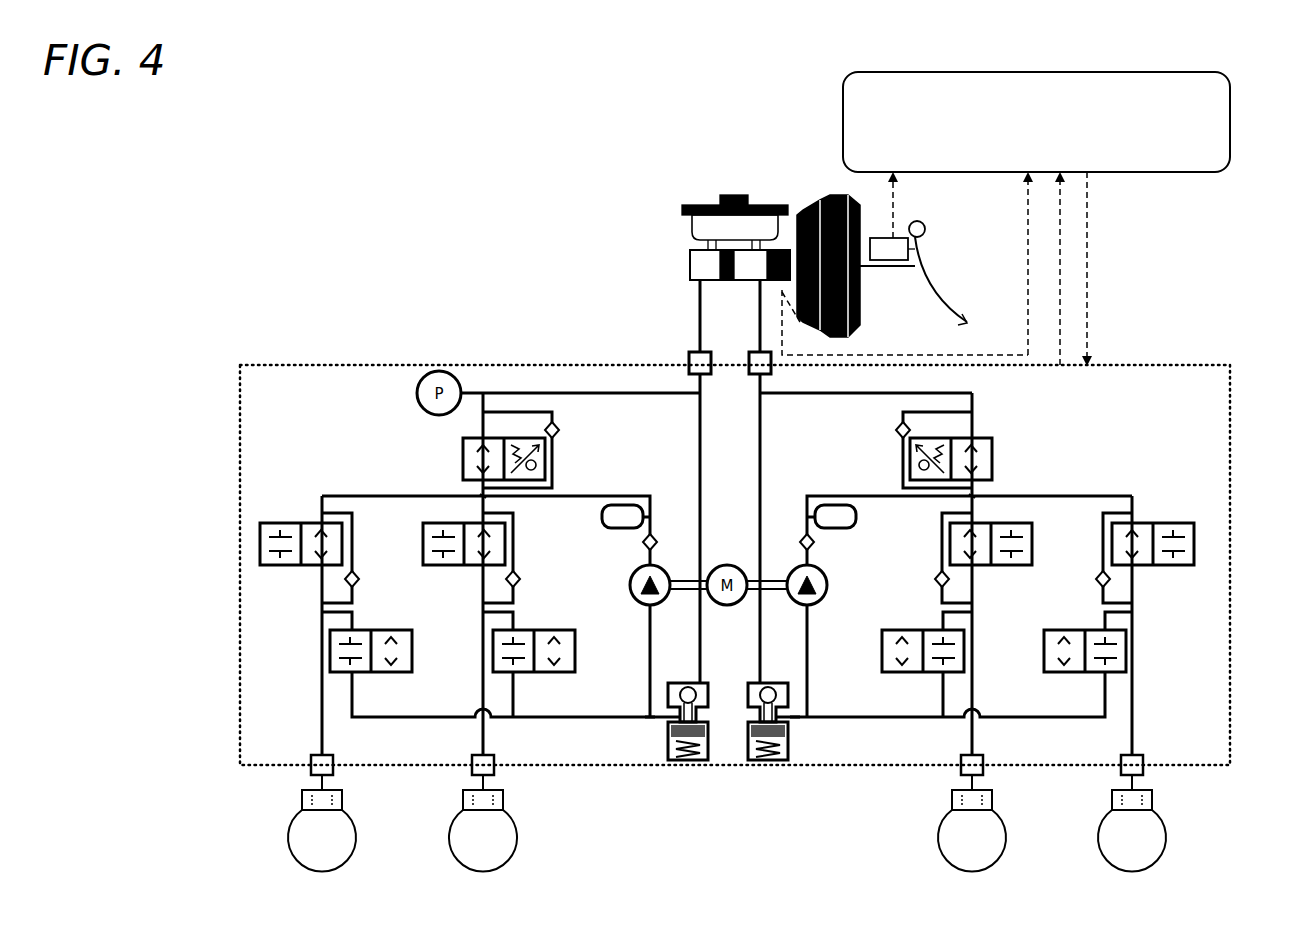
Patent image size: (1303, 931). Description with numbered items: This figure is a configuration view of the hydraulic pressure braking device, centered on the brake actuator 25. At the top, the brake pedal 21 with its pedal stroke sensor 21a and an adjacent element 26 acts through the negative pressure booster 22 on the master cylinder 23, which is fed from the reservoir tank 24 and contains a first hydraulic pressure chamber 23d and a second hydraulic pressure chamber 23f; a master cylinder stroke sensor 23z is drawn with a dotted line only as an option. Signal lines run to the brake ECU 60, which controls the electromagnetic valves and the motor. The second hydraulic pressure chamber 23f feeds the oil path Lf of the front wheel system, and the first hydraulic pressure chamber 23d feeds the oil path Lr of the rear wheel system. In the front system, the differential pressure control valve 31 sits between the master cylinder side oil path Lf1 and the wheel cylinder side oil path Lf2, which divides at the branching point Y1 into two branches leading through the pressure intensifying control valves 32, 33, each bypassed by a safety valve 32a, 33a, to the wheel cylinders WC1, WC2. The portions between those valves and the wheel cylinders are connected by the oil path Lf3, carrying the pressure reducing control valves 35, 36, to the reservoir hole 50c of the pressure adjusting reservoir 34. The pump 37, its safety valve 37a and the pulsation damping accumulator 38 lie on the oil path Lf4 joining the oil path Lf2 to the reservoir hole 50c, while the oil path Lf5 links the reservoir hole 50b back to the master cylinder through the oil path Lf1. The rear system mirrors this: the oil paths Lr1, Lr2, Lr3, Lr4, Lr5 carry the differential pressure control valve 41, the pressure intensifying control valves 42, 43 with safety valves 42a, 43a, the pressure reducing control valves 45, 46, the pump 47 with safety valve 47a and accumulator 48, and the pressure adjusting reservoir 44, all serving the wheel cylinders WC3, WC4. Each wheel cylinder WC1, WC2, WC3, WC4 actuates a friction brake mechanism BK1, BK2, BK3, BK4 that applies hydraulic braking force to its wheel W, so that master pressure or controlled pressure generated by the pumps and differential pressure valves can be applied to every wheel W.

The brake ECU 60 is at (1232, 120).
The reservoir tank 24 is at (733, 195).
The master cylinder 23 is at (690, 256).
The second hydraulic pressure chamber 23f is at (700, 270).
The first hydraulic pressure chamber 23d is at (757, 272).
The master cylinder stroke sensor 23z is at (905, 324).
The negative pressure booster 22 is at (826, 197).
The pedal stroke sensor 26 is at (890, 263).
The pedal stroke sensor 21a is at (897, 238).
The brake pedal 21 is at (928, 281).
The brake actuator 25 is at (1155, 365).
The oil path Lf1 is at (575, 393).
The oil path Lf is at (527, 383).
The oil path Lf2 is at (482, 588).
The oil path Lf3 is at (540, 720).
The oil path Lf4 is at (568, 496).
The oil path Lf5 is at (698, 448).
The oil path Lr1 is at (848, 393).
The oil path Lr is at (980, 405).
The oil path Lr2 is at (1137, 598).
The oil path Lr3 is at (912, 720).
The oil path Lr4 is at (862, 496).
The oil path Lr5 is at (762, 448).
The differential pressure control valve 31 is at (462, 455).
The branching point Y1 is at (480, 494).
The pressure intensifying control valve 32 is at (298, 523).
The safety valve 32a is at (360, 579).
The pressure intensifying control valve 33 is at (422, 545).
The safety valve 33a is at (521, 579).
The pressure reducing control valve 35 is at (385, 630).
The pressure reducing control valve 36 is at (547, 630).
The pump 37 is at (634, 592).
The safety valve 37a is at (642, 542).
The accumulator 38 is at (602, 517).
The pressure adjusting reservoir 34 is at (666, 740).
The pressure adjusting reservoir 44 is at (790, 740).
The reservoir hole 50b is at (712, 682).
The reservoir hole 50c is at (650, 717).
The differential pressure control valve 41 is at (994, 456).
The pressure intensifying control valve 42 is at (1032, 545).
The safety valve 42a is at (936, 579).
The pressure intensifying control valve 43 is at (1162, 523).
The safety valve 43a is at (1098, 579).
The pressure reducing control valve 45 is at (912, 630).
The pressure reducing control valve 46 is at (1077, 630).
The pump 47 is at (830, 588).
The safety valve 47a is at (816, 542).
The accumulator 48 is at (858, 517).
The wheel cylinder WC1 is at (300, 798).
The wheel cylinder WC2 is at (462, 798).
The wheel cylinder WC3 is at (950, 798).
The wheel cylinder WC4 is at (1110, 798).
The friction brake mechanism BK1 is at (343, 802).
The friction brake mechanism BK2 is at (505, 800).
The friction brake mechanism BK3 is at (993, 802).
The friction brake mechanism BK4 is at (1153, 800).
The wheel W is at (355, 824).